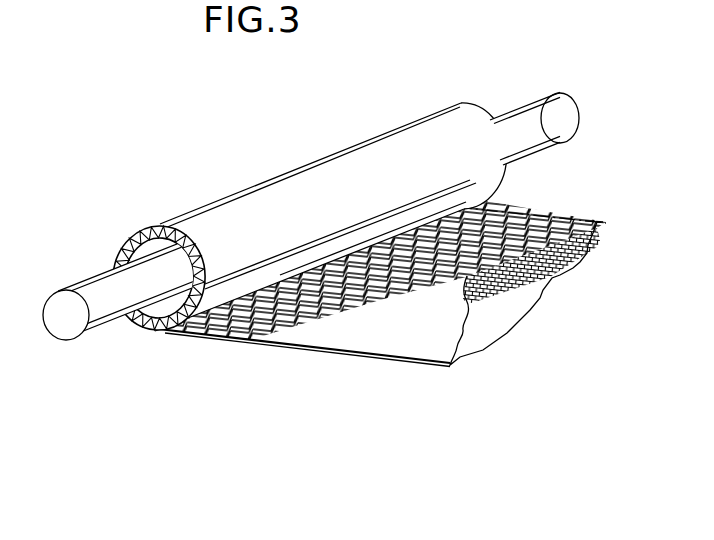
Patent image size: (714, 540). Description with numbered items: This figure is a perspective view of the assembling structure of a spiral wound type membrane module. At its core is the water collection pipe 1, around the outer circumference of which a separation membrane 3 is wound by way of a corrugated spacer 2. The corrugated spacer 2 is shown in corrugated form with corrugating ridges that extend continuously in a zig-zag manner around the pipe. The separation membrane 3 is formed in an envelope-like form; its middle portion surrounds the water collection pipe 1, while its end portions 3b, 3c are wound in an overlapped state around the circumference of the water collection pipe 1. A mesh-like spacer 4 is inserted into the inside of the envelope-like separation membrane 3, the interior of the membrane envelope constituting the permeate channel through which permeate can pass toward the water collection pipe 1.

The water collection pipe 1 is at (109, 342).
The corrugated spacer 2 is at (226, 345).
The separation membrane 3 is at (378, 322).
The end portion 3b is at (398, 334).
The end portion 3c is at (526, 315).
The mesh-like spacer 4 is at (585, 232).